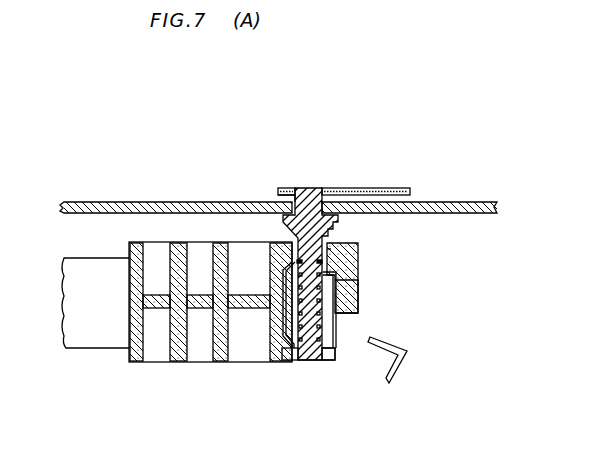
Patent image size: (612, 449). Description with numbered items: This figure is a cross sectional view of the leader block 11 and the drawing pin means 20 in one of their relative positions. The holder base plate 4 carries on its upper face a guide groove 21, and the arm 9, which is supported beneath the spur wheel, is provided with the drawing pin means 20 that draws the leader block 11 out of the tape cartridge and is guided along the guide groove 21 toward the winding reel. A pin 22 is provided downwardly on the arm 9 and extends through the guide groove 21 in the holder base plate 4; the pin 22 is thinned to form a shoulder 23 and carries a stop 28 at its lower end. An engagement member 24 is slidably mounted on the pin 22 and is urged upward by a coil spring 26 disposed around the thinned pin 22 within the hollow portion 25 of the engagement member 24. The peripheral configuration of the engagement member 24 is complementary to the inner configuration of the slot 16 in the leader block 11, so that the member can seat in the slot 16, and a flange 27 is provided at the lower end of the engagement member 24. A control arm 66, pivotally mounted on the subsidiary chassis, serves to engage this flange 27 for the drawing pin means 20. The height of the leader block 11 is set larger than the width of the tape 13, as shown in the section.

The holder base plate 4 is at (438, 204).
The arm 9 is at (353, 192).
The leader block 11 is at (195, 249).
The tape 13 is at (82, 265).
The slot 16 is at (330, 314).
The drawing pin means 20 is at (327, 289).
The guide groove 21 is at (278, 198).
The pin 22 is at (315, 232).
The shoulder 23 is at (327, 251).
The engagement member 24 is at (327, 299).
The hollow portion 25 is at (300, 302).
The coil spring 26 is at (302, 323).
The flange 27 is at (333, 354).
The stop 28 is at (310, 358).
The control arm 66 is at (402, 346).